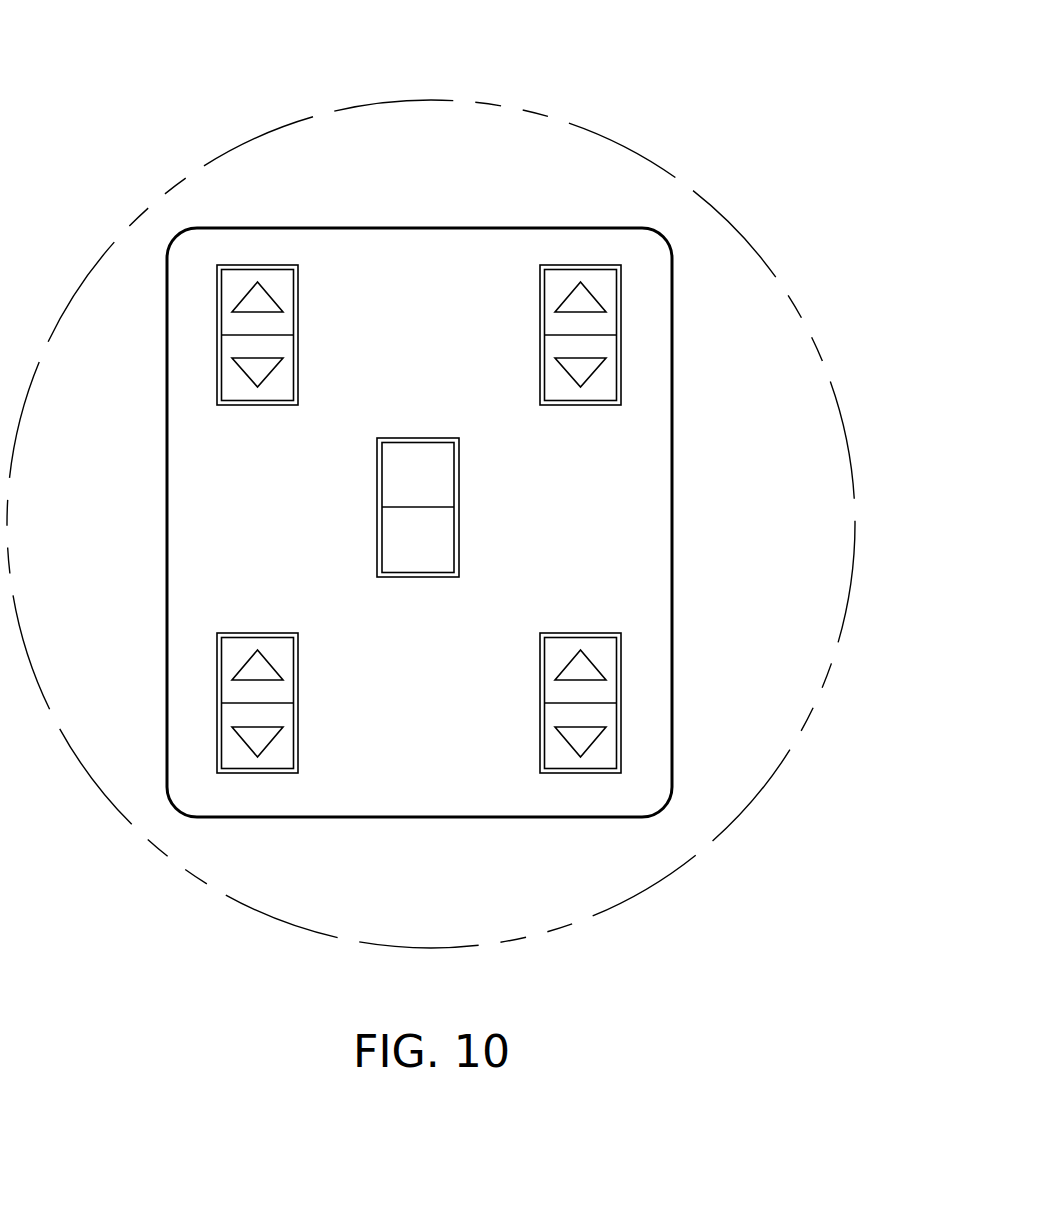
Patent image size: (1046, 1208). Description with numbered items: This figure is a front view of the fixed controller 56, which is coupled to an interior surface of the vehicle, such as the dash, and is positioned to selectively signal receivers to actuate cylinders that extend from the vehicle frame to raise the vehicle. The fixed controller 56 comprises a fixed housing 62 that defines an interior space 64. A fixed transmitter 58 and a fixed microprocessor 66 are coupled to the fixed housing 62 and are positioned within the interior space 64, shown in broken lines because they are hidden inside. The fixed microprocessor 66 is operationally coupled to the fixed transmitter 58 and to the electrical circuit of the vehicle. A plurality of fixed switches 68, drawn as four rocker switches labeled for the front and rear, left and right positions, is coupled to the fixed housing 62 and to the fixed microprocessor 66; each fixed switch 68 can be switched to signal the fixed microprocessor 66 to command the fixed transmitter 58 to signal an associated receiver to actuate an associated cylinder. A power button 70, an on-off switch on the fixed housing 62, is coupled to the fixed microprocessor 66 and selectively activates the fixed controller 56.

The fixed controller 56 is at (650, 112).
The fixed housing 62 is at (672, 293).
The interior space 64 is at (643, 390).
The fixed transmitter 58 is at (653, 407).
The fixed microprocessor 66 is at (632, 457).
The fixed switches 68 is at (543, 393).
The power button 70 is at (457, 528).